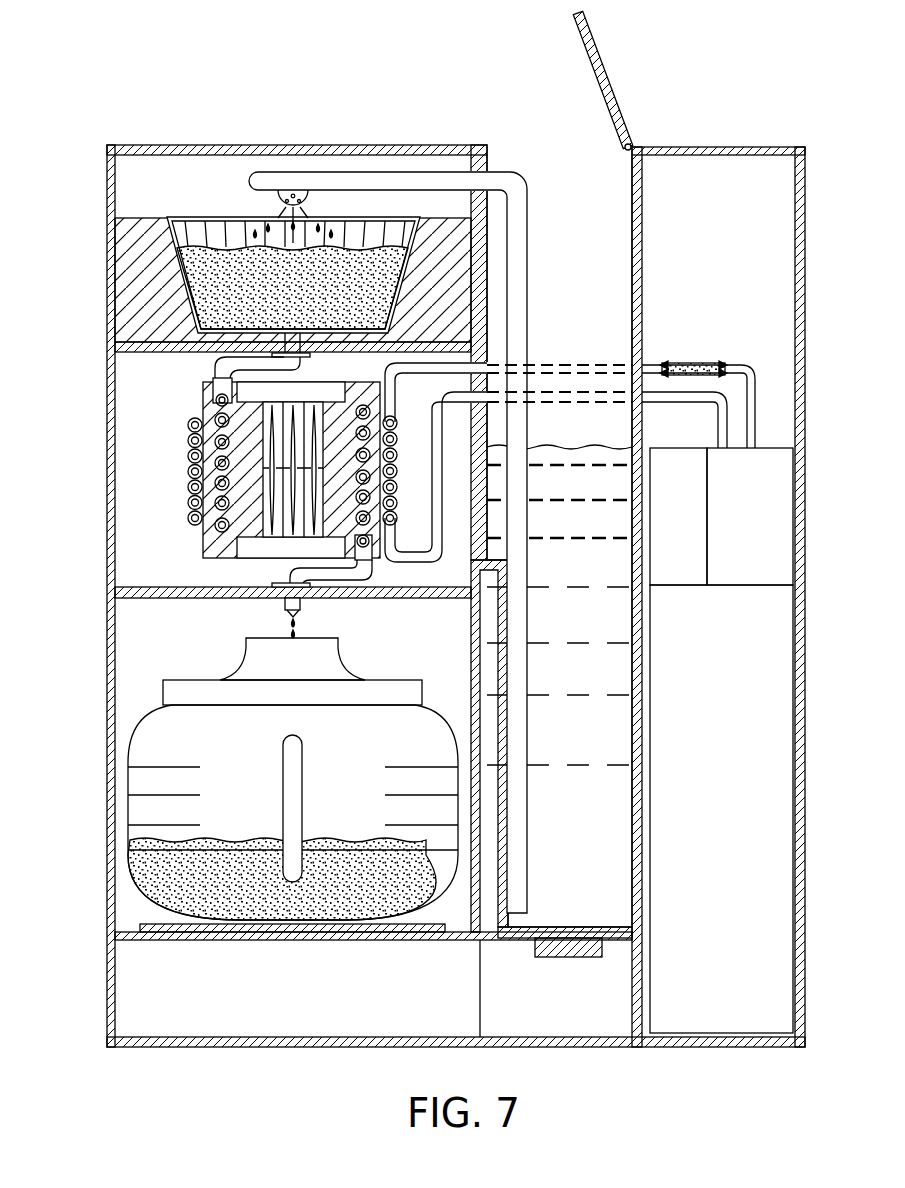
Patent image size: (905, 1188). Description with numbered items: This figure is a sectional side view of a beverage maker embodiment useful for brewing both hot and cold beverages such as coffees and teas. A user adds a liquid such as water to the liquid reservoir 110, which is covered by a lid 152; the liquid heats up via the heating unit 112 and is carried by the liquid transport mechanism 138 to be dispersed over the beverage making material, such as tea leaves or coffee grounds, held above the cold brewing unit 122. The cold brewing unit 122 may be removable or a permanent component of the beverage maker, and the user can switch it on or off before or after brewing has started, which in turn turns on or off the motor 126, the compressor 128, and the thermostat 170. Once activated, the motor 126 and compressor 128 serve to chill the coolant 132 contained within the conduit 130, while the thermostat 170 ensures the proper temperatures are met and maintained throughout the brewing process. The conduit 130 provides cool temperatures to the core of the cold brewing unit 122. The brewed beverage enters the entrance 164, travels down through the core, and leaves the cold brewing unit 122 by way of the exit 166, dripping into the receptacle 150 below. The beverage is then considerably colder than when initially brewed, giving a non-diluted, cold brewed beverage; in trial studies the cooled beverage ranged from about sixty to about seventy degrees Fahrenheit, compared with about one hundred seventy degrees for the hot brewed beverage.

The liquid reservoir 110 is at (564, 447).
The heating unit 112 is at (572, 957).
The cold brewing unit 122 is at (107, 470).
The motor 126 is at (743, 819).
The compressor 128 is at (771, 529).
The conduit 130 is at (746, 366).
The coolant 132 is at (700, 363).
The liquid transport mechanism 138 is at (520, 174).
The receptacle 150 is at (123, 726).
The lid 152 is at (607, 71).
The entrance 164 is at (212, 366).
The exit 166 is at (215, 414).
The thermostat 170 is at (697, 529).